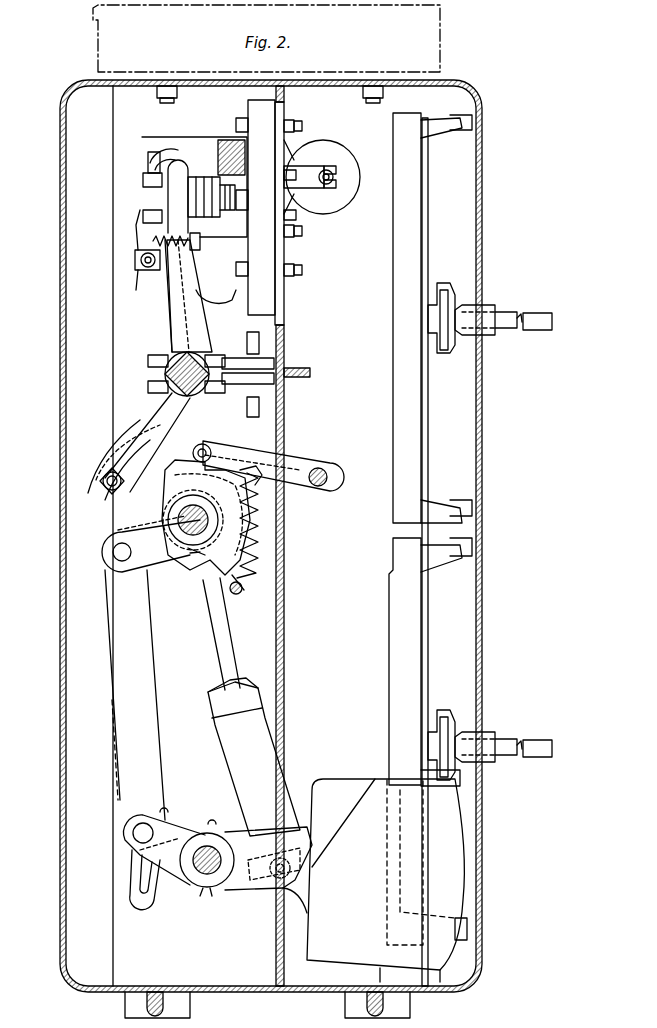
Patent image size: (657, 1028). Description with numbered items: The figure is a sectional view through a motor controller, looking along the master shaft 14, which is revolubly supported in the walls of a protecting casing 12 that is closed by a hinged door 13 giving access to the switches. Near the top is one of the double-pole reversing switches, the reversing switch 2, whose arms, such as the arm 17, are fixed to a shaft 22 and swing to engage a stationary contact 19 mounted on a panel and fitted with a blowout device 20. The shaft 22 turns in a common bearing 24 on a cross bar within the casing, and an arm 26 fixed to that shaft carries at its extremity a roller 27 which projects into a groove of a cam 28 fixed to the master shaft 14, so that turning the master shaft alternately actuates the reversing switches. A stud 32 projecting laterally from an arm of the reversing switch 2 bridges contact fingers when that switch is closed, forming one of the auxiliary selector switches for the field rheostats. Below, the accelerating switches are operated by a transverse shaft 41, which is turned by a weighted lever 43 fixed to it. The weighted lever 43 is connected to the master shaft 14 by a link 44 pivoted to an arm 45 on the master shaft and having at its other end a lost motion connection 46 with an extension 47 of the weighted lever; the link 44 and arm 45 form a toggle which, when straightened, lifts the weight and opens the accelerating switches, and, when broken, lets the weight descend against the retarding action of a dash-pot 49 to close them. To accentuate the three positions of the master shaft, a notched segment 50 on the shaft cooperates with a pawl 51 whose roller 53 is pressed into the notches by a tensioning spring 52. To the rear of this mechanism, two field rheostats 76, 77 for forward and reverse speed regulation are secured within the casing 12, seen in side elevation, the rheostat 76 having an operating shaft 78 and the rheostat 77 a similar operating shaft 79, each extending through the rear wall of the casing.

The double-pole reversing switch 2 is at (172, 316).
The protecting casing 12 is at (250, 988).
The hinged door 13 is at (61, 908).
The master shaft 14 is at (180, 512).
The switch arm 17 is at (186, 283).
The stationary contact 19 is at (206, 180).
The blowout device 20 is at (338, 158).
The shaft 22 is at (196, 356).
The common bearing 24 is at (228, 360).
The arm 26 is at (150, 406).
The roller 27 is at (104, 495).
The cam 28 is at (108, 458).
The stud 32 is at (152, 270).
The transverse shaft 41 is at (212, 875).
The weighted lever 43 is at (350, 782).
The link 44 is at (147, 672).
The arm 45 is at (152, 565).
The lost motion connection 46 is at (155, 895).
The extension 47 is at (170, 822).
The dash-pot 49 is at (234, 762).
The notched segment 50 is at (172, 476).
The pawl 51 is at (290, 468).
The tensioning spring 52 is at (242, 560).
The roller 53 is at (203, 444).
The field rheostat 76 is at (396, 404).
The field rheostat 77 is at (395, 648).
The operating shaft 78 is at (518, 330).
The operating shaft 79 is at (505, 745).